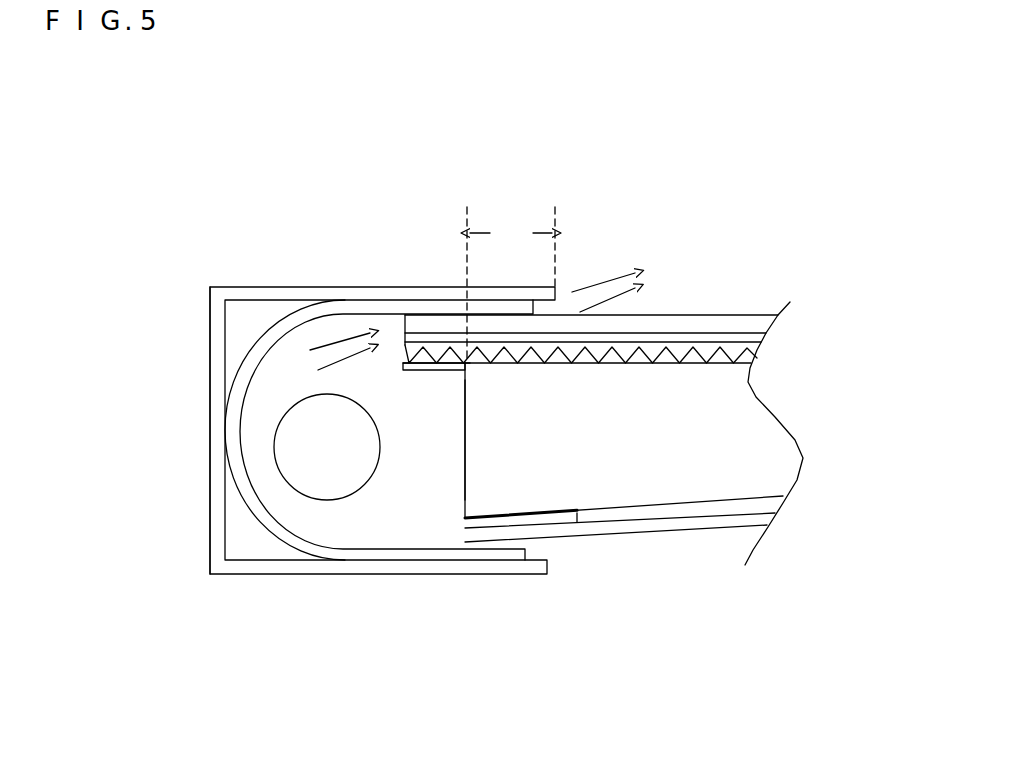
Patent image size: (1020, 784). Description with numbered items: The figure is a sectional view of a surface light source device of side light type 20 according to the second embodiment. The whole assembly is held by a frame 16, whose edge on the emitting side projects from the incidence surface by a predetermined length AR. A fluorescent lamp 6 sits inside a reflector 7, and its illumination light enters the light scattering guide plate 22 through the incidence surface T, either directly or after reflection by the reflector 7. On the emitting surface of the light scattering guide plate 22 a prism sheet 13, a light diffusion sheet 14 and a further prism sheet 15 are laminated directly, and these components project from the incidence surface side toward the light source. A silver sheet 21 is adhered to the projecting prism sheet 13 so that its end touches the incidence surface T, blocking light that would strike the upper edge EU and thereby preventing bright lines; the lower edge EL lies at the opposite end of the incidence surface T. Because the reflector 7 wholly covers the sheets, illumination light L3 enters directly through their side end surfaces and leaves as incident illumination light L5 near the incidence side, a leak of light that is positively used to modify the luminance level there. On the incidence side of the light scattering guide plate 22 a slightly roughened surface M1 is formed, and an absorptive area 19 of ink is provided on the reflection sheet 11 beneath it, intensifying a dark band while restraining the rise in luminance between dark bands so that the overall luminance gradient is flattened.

The surface light source device of side light type 20 is at (230, 111).
The frame 16 is at (382, 378).
The reflector 7 is at (379, 485).
The fluorescent lamp 6 is at (327, 532).
The illumination light L3 is at (340, 297).
The predetermined length AR is at (511, 284).
The incident illumination light L5 is at (603, 257).
The prism sheet 15 is at (591, 274).
The light diffusion sheet 14 is at (583, 272).
The prism sheet 13 is at (605, 283).
The silver sheet 21 is at (434, 412).
The light scattering guide plate 22 is at (674, 433).
The upper edge EU is at (511, 390).
The incidence surface T is at (505, 440).
The lower edge EL is at (508, 501).
The roughened surface M1 is at (605, 480).
The absorptive area 19 is at (620, 575).
The reflection sheet 11 is at (616, 579).